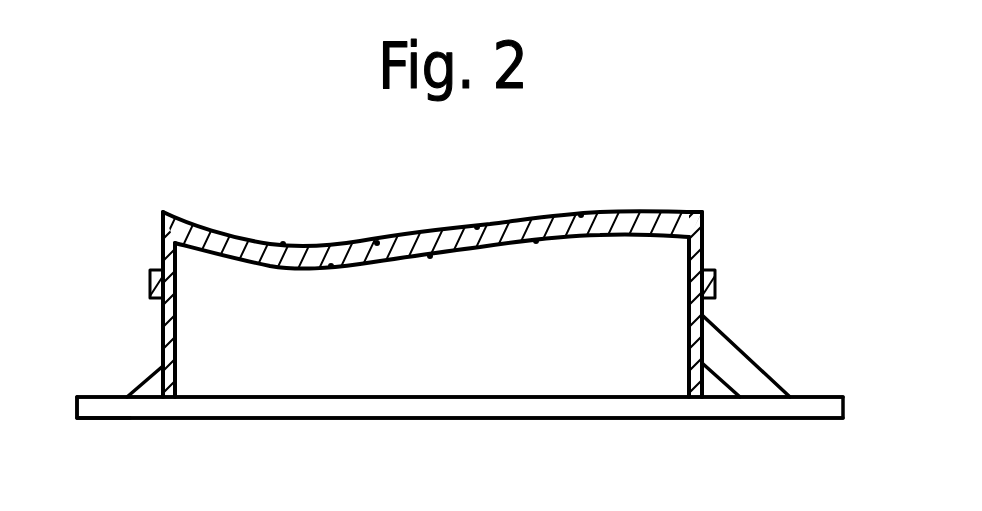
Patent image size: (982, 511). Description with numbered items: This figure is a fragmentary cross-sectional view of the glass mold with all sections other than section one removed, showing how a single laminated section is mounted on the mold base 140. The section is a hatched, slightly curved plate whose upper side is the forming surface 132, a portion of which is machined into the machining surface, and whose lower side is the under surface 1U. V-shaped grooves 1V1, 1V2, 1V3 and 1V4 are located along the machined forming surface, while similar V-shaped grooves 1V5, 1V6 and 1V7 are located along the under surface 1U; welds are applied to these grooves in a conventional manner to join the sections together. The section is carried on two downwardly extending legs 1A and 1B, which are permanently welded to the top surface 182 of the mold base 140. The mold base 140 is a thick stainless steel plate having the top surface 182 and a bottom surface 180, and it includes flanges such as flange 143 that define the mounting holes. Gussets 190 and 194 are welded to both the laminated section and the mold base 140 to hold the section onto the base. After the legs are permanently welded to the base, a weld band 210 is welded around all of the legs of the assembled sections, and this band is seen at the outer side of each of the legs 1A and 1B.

The forming surface 132 is at (311, 243).
The leg 1A is at (167, 240).
The leg 1B is at (704, 233).
The under surface 1U is at (247, 264).
The V-shaped groove 1V1 is at (283, 244).
The V-shaped groove 1V2 is at (377, 243).
The V-shaped groove 1V3 is at (477, 227).
The V-shaped groove 1V4 is at (581, 215).
The V-shaped groove 1V5 is at (331, 266).
The V-shaped groove 1V6 is at (430, 256).
The V-shaped groove 1V7 is at (536, 241).
The weld band 210 is at (151, 283).
The gusset 190 is at (141, 381).
The gusset 194 is at (753, 357).
The mold base 140 is at (360, 421).
The bottom surface 180 is at (220, 421).
The top surface 182 is at (610, 395).
The flange 143 is at (97, 421).